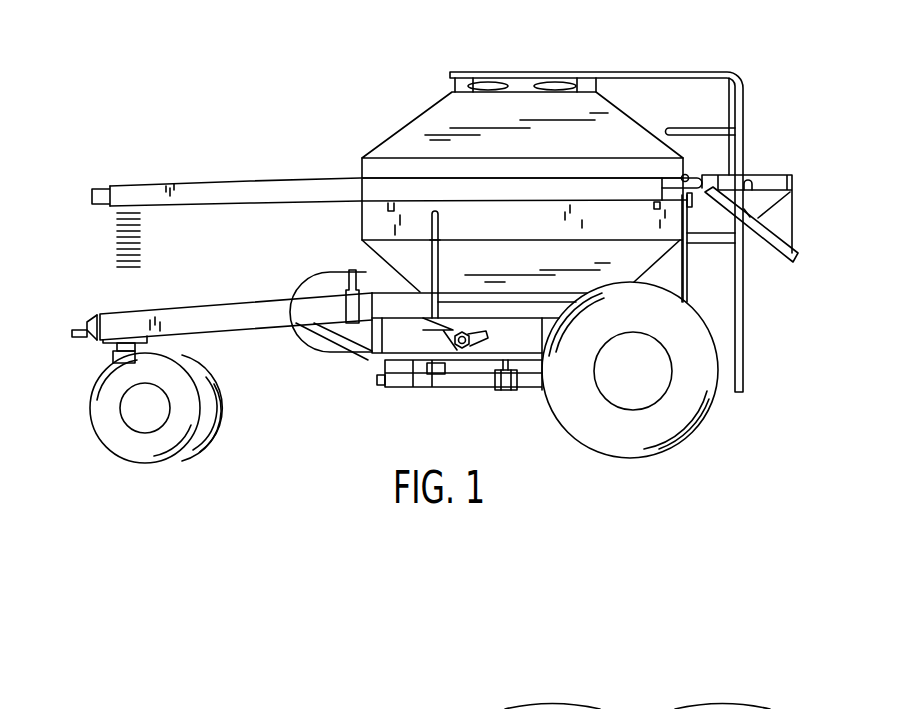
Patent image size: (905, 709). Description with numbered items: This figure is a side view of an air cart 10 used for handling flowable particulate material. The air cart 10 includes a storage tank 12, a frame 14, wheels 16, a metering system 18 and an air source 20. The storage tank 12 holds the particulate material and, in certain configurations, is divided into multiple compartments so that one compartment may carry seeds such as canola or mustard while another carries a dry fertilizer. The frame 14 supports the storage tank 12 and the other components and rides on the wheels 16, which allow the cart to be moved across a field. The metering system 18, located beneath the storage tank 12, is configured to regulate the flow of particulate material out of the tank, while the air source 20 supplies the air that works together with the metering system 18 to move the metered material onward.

The air cart 10 is at (352, 76).
The storage tank 12 is at (431, 108).
The frame 14 is at (224, 304).
The wheels 16 is at (108, 446).
The metering system 18 is at (474, 340).
The air source 20 is at (303, 282).